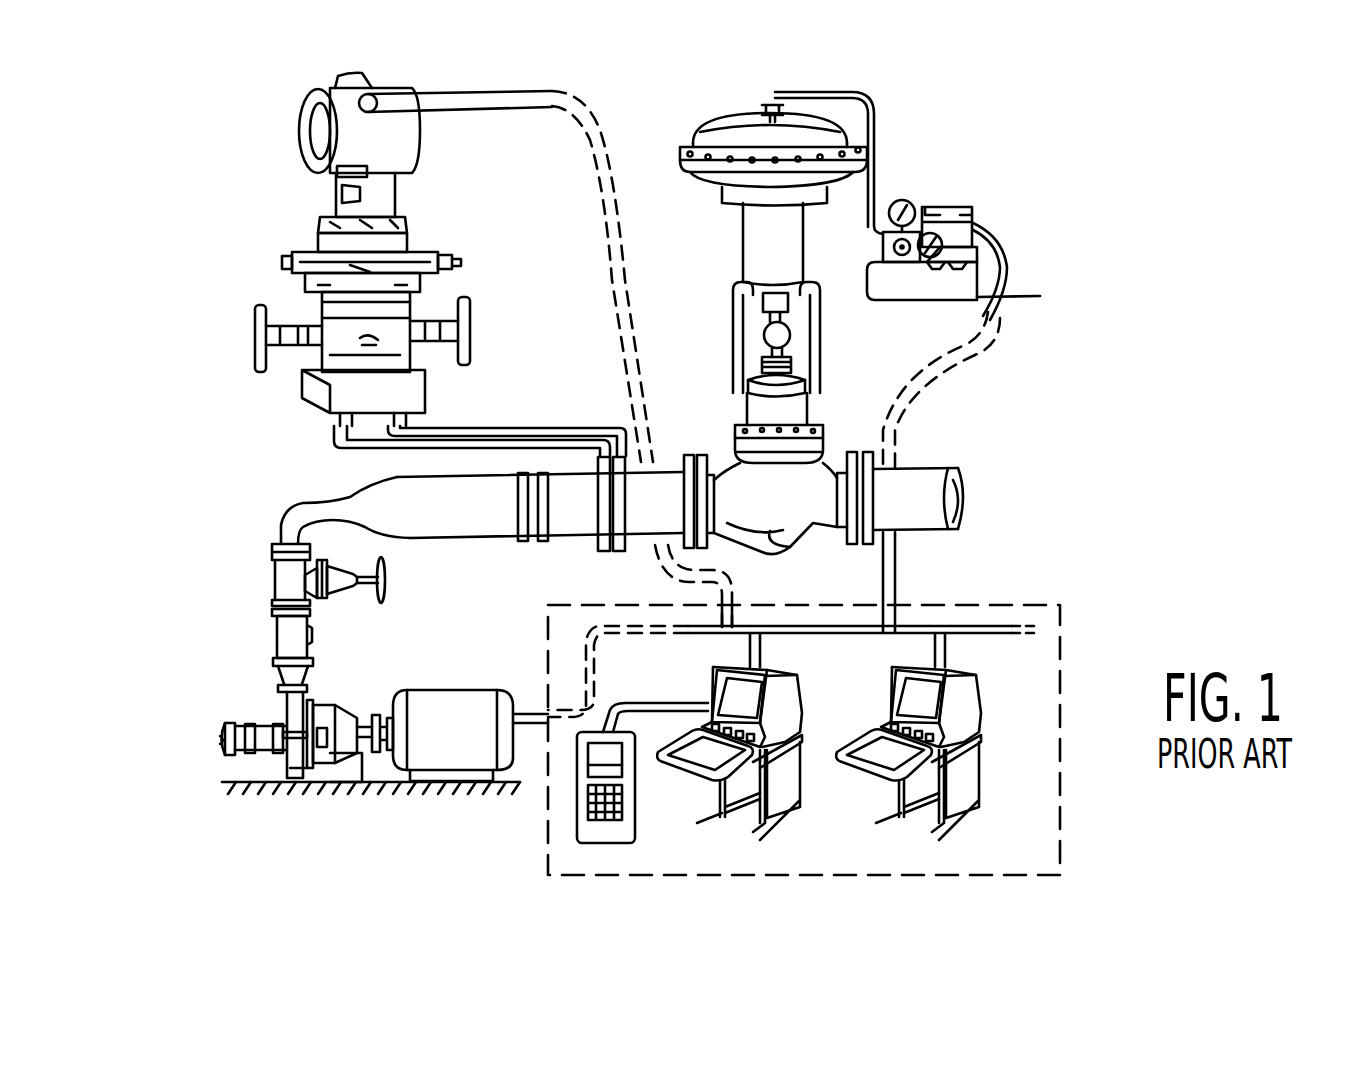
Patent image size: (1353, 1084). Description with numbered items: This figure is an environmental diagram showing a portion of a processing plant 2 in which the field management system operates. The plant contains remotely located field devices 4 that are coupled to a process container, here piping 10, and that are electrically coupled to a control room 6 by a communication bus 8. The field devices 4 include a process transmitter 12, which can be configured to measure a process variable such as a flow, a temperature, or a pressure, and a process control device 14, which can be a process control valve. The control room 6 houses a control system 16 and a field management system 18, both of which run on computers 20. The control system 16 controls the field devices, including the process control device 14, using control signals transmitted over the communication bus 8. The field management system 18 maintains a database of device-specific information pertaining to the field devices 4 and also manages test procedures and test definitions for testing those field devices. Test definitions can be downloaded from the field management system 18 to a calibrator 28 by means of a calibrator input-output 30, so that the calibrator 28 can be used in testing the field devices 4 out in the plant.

The processing plant 2 is at (1074, 212).
The field devices 4 is at (312, 133).
The control room 6 is at (1062, 800).
The communication bus 8 is at (618, 282).
The piping 10 is at (378, 487).
The process transmitter 12 is at (229, 699).
The process control device 14 is at (860, 277).
The control system 16 is at (978, 680).
The field management system 18 is at (790, 691).
The computers 20 is at (898, 790).
The calibrator 28 is at (577, 797).
The calibrator input-output 30 is at (650, 701).